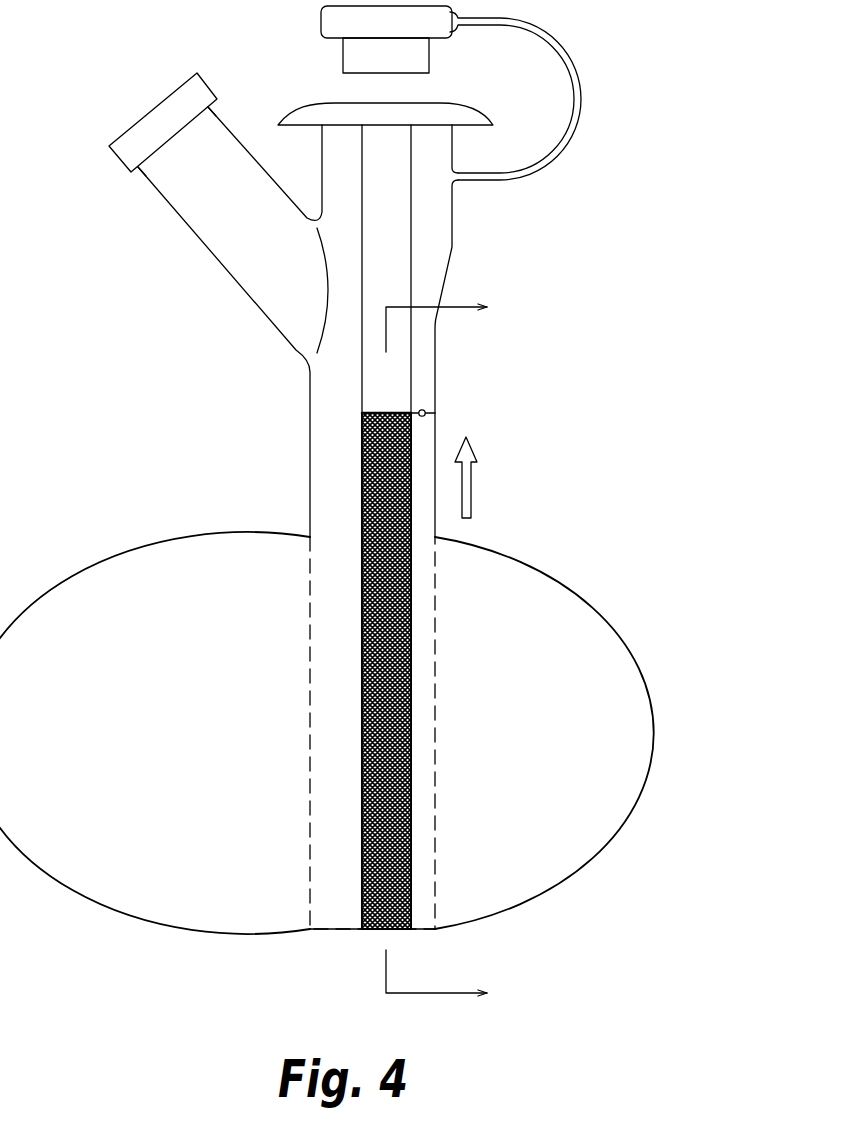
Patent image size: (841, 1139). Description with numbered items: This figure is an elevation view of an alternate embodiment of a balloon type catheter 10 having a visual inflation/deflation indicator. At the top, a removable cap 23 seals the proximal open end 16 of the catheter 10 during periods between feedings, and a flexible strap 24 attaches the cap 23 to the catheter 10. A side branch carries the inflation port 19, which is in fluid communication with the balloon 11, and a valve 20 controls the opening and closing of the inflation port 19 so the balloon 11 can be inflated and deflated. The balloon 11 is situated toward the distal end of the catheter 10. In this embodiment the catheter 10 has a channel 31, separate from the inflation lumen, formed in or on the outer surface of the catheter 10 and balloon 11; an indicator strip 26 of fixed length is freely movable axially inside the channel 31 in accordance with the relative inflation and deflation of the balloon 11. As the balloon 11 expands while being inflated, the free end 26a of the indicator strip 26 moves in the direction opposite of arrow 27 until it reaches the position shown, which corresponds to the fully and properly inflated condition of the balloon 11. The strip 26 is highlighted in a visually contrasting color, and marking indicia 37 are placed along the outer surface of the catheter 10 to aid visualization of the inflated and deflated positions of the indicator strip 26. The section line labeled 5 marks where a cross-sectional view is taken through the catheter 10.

The catheter 10 is at (638, 203).
The balloon 11 is at (643, 673).
The proximal open end 16 is at (352, 103).
The inflation port 19 is at (153, 108).
The valve 20 is at (133, 158).
The removable cap 23 is at (395, 55).
The flexible strap 24 is at (573, 62).
The indicator strip 26 is at (362, 688).
The free end 26a is at (362, 418).
The arrow 27 is at (471, 492).
The channel 31 is at (412, 213).
The marking indicia 37 is at (445, 403).
The section line 5- 5 is at (453, 652).